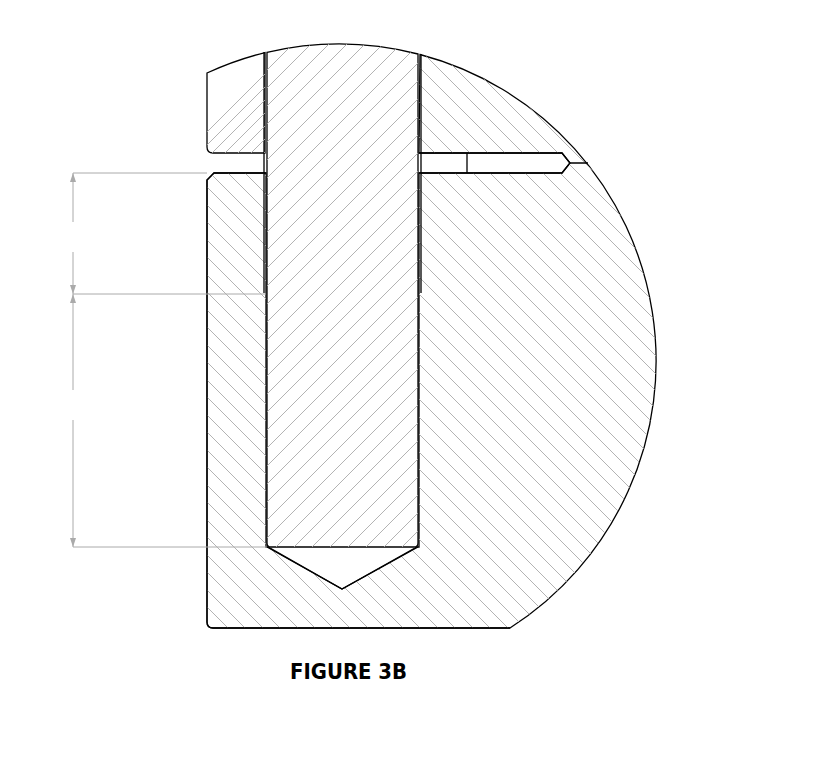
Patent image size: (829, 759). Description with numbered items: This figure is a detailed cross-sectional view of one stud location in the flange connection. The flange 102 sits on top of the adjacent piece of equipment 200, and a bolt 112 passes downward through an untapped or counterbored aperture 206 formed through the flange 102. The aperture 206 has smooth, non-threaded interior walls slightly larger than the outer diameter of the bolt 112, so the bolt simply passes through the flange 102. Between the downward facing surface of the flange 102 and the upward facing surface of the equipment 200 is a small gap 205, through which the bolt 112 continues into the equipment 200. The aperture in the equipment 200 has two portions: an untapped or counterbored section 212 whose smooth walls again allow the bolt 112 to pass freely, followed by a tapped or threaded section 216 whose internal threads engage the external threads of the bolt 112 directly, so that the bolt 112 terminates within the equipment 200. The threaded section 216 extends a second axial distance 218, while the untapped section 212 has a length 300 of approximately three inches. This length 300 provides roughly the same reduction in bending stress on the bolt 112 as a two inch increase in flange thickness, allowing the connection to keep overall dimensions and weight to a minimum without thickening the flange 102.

The flange 102 is at (498, 120).
The bolt 112 is at (292, 499).
The piece of equipment 200 is at (260, 588).
The gap 205 is at (437, 162).
The untapped or counterbored aperture 206 is at (265, 83).
The untapped or counterbored section 212 is at (262, 215).
The tapped or threaded section 216 is at (262, 318).
The second axial distance 218 is at (160, 420).
The length of the untapped portion 300 is at (160, 233).